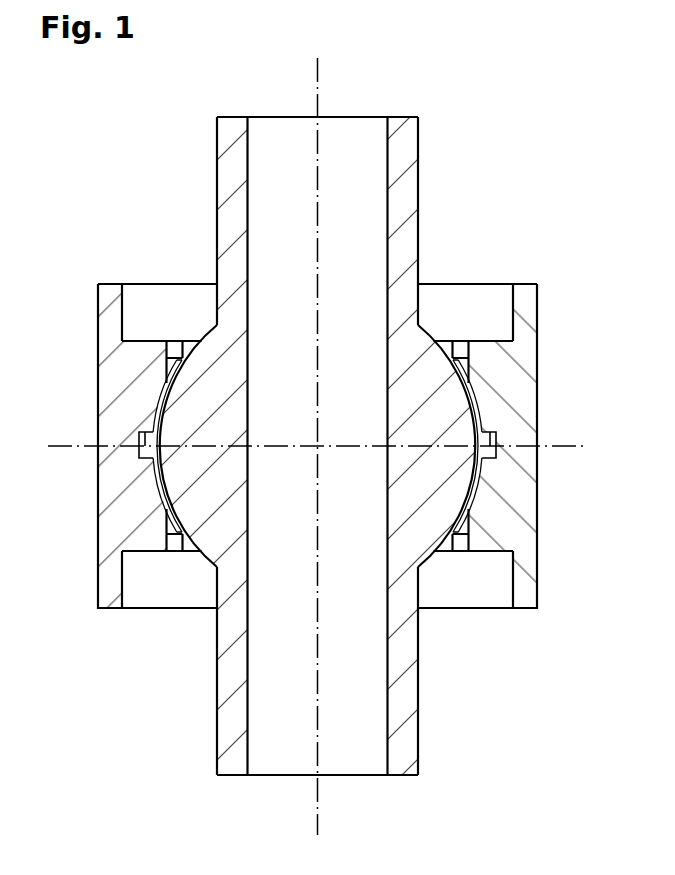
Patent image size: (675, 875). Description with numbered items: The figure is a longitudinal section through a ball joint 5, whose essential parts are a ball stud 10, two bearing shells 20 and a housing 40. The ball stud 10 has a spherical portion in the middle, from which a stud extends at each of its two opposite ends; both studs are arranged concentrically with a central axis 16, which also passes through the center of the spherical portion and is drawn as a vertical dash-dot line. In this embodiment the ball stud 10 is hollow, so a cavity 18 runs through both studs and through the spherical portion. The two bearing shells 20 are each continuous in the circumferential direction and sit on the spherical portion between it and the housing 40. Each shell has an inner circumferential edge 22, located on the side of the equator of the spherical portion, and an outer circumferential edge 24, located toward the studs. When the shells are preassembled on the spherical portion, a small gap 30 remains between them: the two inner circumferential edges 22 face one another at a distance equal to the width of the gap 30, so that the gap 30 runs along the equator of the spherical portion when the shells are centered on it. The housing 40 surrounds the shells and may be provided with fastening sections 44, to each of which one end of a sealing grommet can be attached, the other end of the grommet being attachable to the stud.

The ball joint 5 is at (105, 699).
The ball stud 10 is at (432, 405).
The central axis 16 is at (318, 73).
The cavity 18 is at (367, 205).
The bearing shell 20 is at (477, 412).
The inner circumferential edge 22 is at (141, 457).
The outer circumferential edge 24 is at (458, 360).
The gap 30 is at (488, 425).
The housing 40 is at (512, 538).
The fastening section 44 is at (123, 310).